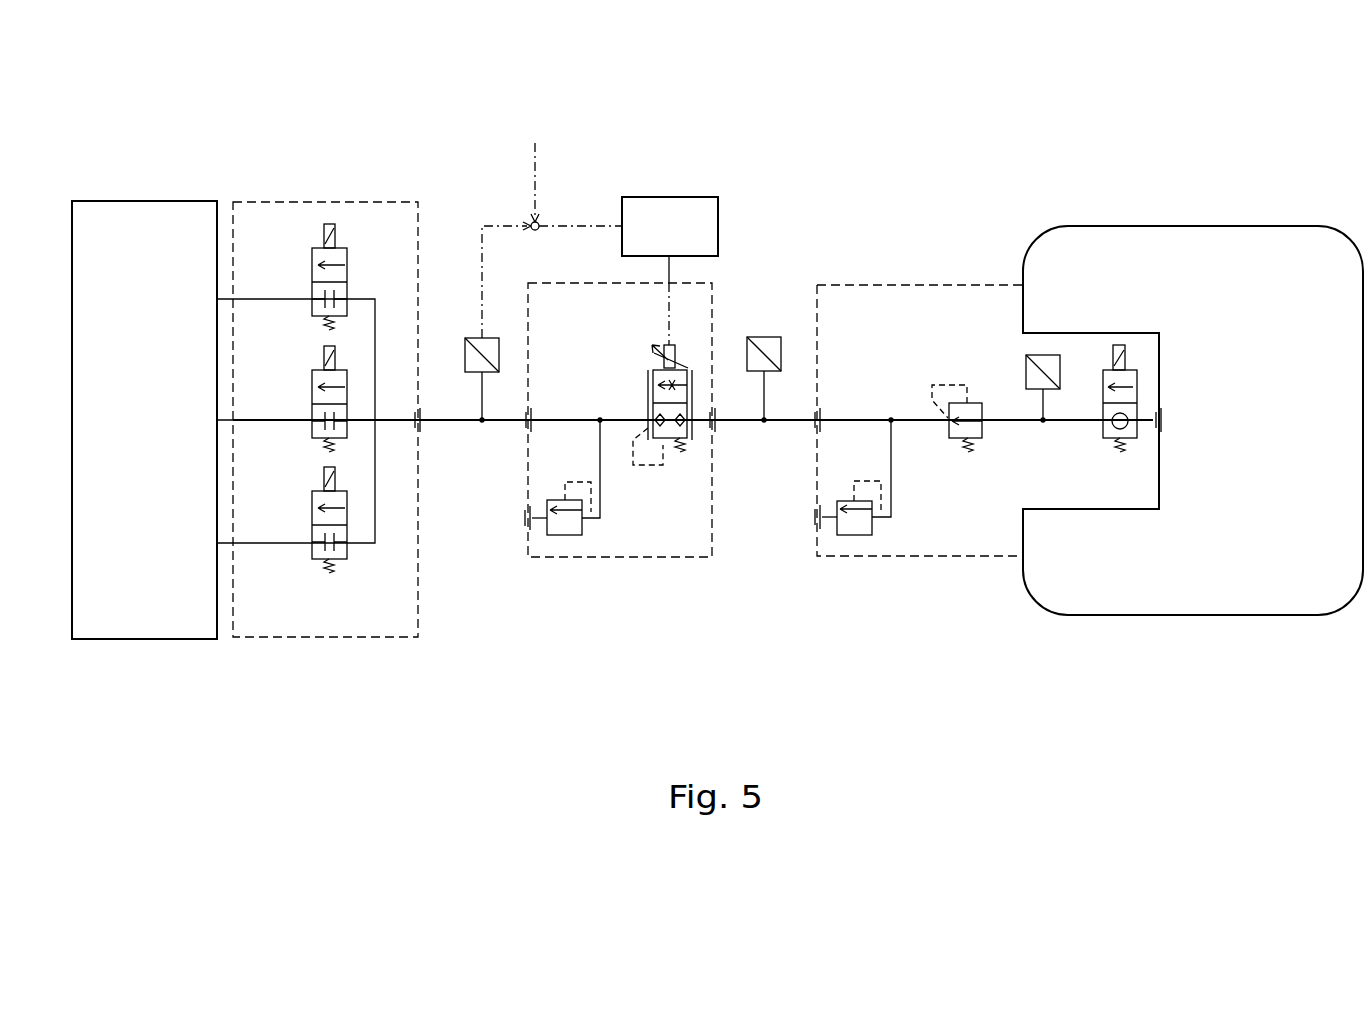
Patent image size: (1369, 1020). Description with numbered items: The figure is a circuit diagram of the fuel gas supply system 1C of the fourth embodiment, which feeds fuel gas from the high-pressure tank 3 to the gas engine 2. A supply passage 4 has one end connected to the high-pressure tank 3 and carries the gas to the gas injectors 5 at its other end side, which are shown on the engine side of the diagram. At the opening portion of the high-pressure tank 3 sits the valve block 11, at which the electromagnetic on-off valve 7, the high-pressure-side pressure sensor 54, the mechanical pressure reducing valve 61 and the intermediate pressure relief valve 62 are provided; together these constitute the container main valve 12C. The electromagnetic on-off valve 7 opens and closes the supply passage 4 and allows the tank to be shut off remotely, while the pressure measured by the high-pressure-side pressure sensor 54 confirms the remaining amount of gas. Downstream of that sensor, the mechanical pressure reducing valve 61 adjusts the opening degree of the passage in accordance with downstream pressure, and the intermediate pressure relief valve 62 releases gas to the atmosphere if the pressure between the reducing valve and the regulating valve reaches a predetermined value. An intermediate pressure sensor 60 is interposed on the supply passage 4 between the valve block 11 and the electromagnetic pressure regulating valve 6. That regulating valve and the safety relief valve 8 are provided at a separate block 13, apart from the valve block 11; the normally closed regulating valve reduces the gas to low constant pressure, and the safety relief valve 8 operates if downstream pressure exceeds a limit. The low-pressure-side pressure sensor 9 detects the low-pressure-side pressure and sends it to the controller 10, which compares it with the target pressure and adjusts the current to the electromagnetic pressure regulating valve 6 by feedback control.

The fuel gas supply system 1C is at (1000, 180).
The gas engine 2 is at (153, 220).
The high-pressure tank 3 is at (1207, 248).
The supply passage 4 is at (787, 422).
The gas injector 5 is at (312, 250).
The electromagnetic pressure regulating valve 6 is at (653, 373).
The electromagnetic on-off valve 7 is at (1104, 436).
The safety relief valve 8 is at (577, 531).
The low-pressure-side pressure sensor 9 is at (465, 338).
The controller 10 is at (683, 200).
The valve block 11 is at (890, 285).
The container main valve 12C is at (903, 560).
The separate block 13 is at (692, 560).
The high-pressure-side pressure sensor 54 is at (1049, 368).
The intermediate pressure sensor 60 is at (767, 347).
The mechanical pressure reducing valve 61 is at (948, 428).
The intermediate pressure relief valve 62 is at (854, 532).